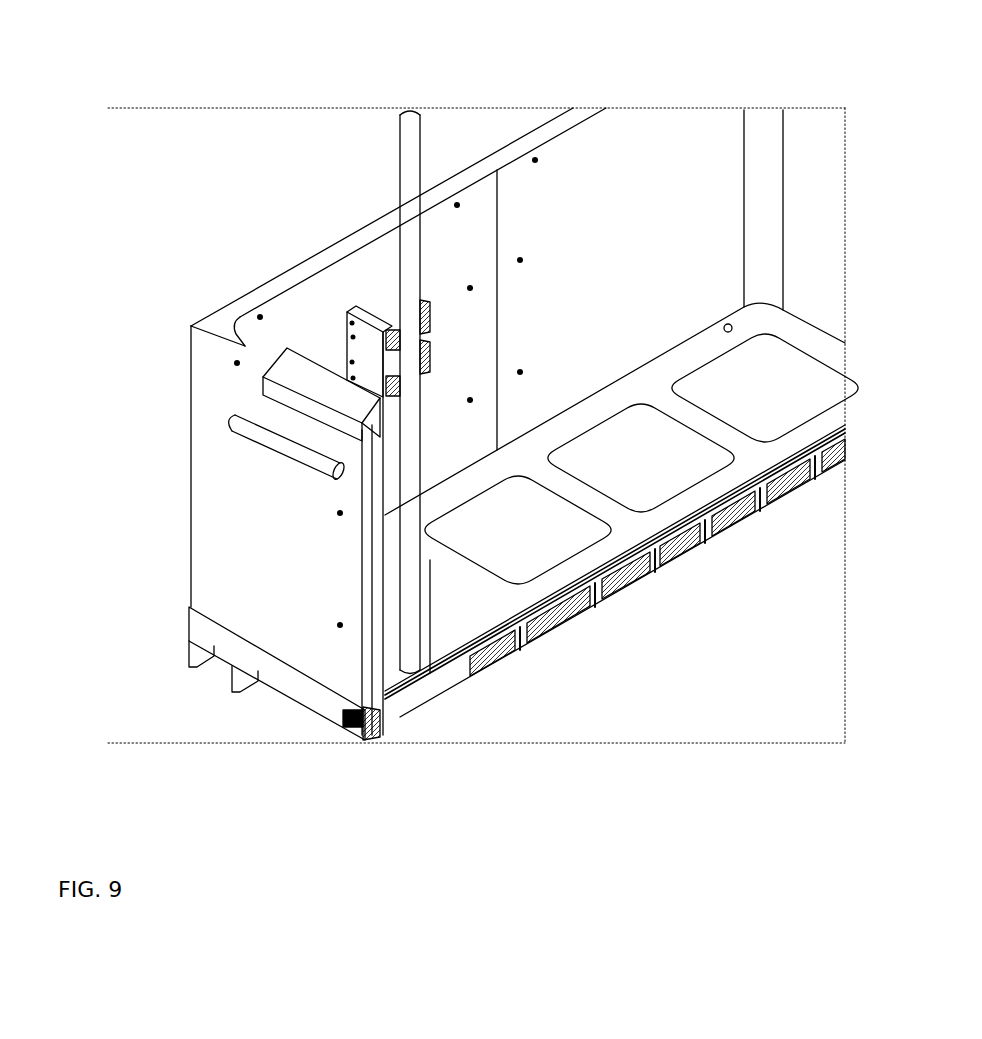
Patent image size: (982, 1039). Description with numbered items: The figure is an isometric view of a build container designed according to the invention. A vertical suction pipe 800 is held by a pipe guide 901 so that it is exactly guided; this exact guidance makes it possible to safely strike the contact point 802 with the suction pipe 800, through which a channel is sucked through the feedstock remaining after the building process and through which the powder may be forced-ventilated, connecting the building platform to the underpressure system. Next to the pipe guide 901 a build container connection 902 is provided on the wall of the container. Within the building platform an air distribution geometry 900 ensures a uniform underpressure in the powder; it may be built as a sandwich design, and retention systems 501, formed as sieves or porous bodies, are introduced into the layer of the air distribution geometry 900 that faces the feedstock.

The suction pipe 800 is at (412, 214).
The contact point with the building platform 802 is at (409, 679).
The air distribution geometry 900 is at (648, 519).
The pipe guide 901 is at (356, 349).
The build container connection 902 is at (312, 388).
The retention system 501 is at (524, 550).